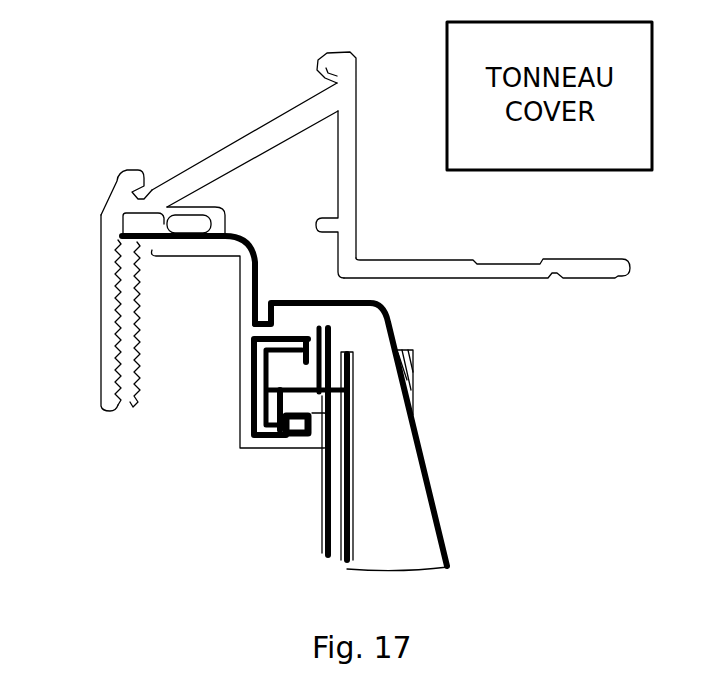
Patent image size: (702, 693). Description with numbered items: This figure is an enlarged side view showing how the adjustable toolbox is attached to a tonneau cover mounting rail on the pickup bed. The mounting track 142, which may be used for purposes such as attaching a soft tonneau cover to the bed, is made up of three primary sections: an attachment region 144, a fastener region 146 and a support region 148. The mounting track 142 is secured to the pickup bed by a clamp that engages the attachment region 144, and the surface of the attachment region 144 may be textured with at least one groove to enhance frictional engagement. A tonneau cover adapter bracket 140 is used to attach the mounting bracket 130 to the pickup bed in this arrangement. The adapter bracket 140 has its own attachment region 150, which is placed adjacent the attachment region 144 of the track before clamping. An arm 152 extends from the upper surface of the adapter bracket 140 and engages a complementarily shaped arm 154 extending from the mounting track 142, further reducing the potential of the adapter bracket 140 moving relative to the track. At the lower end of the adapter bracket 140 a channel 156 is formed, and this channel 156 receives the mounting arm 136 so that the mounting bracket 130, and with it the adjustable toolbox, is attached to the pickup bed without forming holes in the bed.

The mounting bracket 130 is at (337, 537).
The fastening mechanism 136 is at (421, 507).
The tonneau cover adapter bracket 140 is at (243, 410).
The mounting track 142 is at (351, 152).
The attachment region 144 is at (106, 333).
The fastener region 146 is at (253, 131).
The support region 148 is at (507, 262).
The attachment region 150 is at (138, 357).
The arm 152 is at (215, 212).
The complementarily shaped arm 154 is at (183, 240).
The channel 156 is at (298, 434).